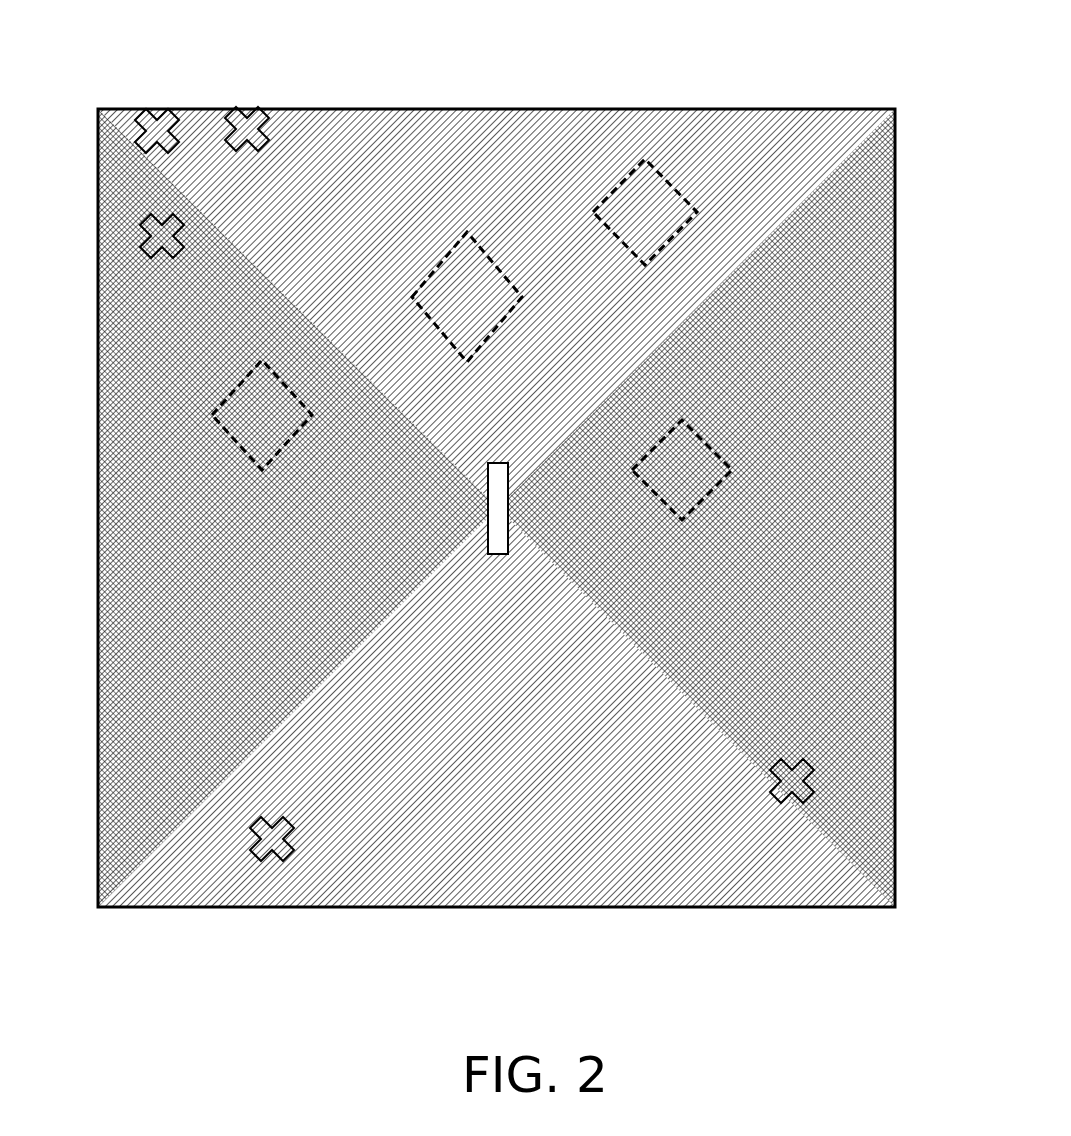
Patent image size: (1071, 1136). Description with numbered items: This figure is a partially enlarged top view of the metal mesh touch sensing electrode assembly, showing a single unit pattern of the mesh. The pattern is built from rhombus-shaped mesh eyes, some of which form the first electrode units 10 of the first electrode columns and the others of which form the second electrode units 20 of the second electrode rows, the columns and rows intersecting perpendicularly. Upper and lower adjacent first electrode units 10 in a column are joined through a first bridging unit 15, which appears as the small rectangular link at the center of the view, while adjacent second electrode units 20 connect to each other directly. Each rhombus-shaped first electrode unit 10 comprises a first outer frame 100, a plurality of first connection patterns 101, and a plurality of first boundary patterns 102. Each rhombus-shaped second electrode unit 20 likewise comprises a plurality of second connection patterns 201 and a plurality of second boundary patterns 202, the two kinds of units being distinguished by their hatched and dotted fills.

The first electrode unit 10 is at (232, 280).
The first bridging unit 15 is at (470, 492).
The second electrode unit 20 is at (331, 755).
The first outer frame 100 is at (224, 130).
The first connection pattern 101 is at (485, 265).
The first boundary pattern 102 is at (135, 130).
The second connection pattern 201 is at (284, 360).
The second boundary pattern 202 is at (140, 240).